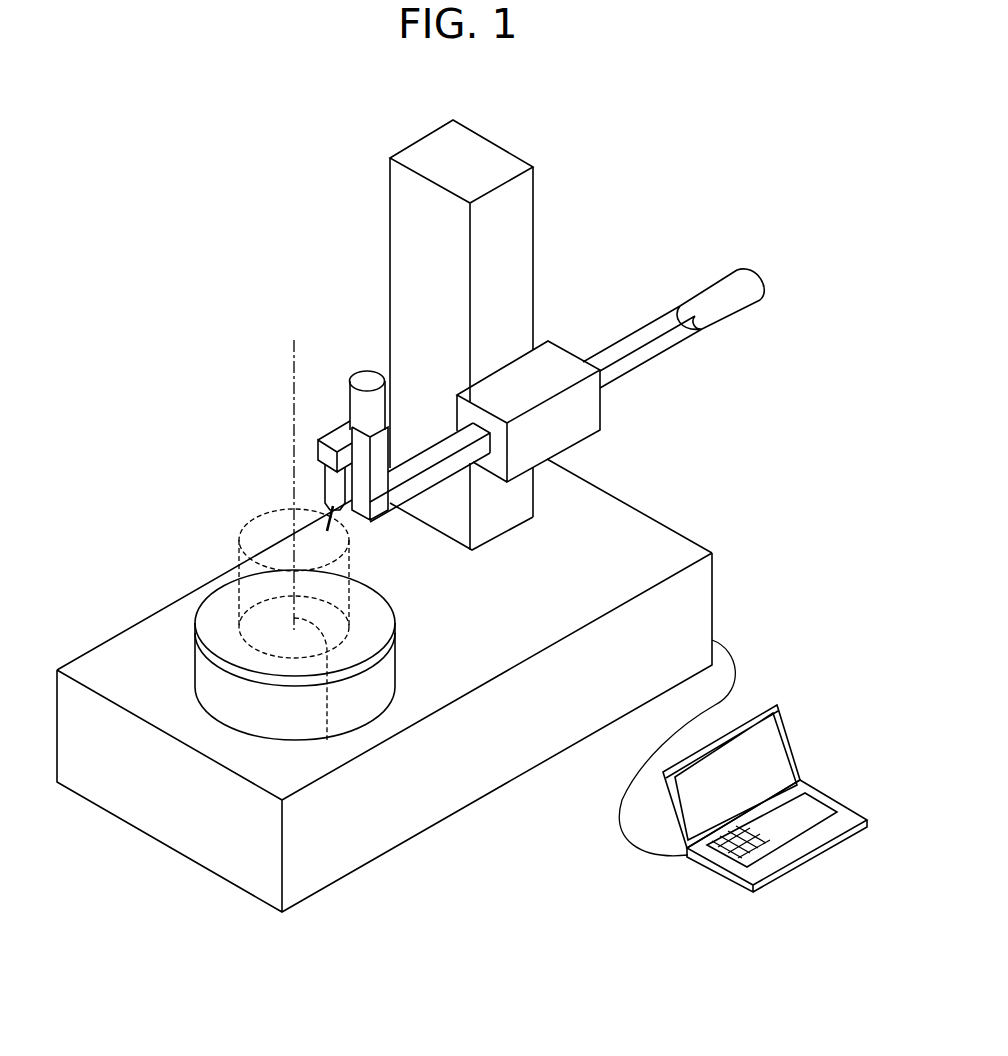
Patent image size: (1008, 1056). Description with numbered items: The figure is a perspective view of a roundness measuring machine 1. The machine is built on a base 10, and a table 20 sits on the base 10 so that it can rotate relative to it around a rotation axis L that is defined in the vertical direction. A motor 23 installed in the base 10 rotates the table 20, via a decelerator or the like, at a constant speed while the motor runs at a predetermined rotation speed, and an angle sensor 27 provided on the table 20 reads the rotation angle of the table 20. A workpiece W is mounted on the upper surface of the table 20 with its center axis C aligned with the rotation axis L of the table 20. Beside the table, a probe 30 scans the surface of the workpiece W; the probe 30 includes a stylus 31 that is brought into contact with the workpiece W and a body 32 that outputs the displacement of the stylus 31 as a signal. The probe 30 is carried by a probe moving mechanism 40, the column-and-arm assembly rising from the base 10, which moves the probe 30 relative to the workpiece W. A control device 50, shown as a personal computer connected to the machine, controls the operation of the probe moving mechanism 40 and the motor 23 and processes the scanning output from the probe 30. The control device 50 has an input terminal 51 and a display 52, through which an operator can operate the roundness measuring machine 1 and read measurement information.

The roundness measuring machine 1 is at (247, 127).
The base 10 is at (470, 788).
The table 20 is at (305, 704).
The motor 23 is at (302, 722).
The angle sensor 27 is at (343, 715).
The probe 30 is at (280, 451).
The stylus 31 is at (325, 517).
The body 32 is at (326, 487).
The probe moving mechanism 40 is at (416, 114).
The control device 50 is at (743, 749).
The input terminal 51 is at (798, 810).
The display 52 is at (770, 740).
The workpiece W is at (240, 547).
The center axis C is at (296, 470).
The rotation axis L is at (327, 740).